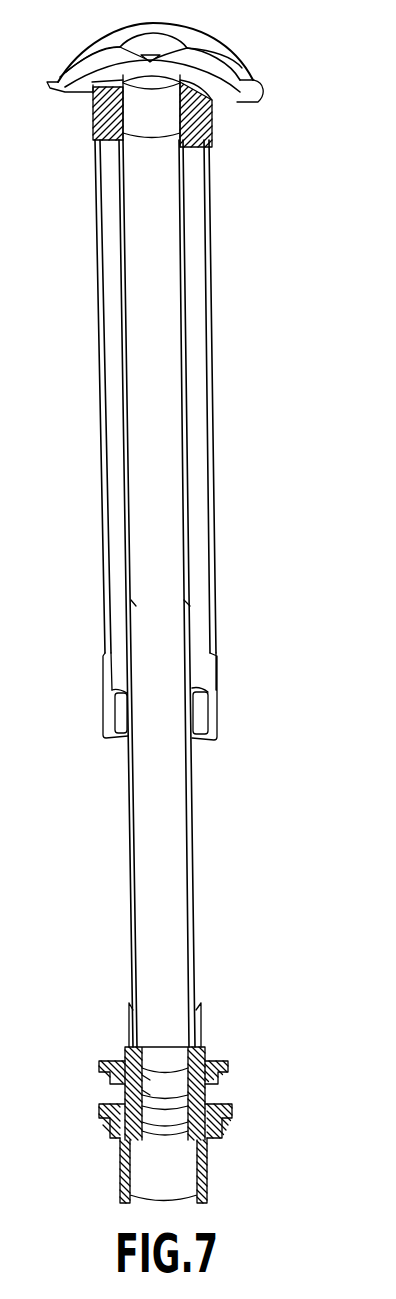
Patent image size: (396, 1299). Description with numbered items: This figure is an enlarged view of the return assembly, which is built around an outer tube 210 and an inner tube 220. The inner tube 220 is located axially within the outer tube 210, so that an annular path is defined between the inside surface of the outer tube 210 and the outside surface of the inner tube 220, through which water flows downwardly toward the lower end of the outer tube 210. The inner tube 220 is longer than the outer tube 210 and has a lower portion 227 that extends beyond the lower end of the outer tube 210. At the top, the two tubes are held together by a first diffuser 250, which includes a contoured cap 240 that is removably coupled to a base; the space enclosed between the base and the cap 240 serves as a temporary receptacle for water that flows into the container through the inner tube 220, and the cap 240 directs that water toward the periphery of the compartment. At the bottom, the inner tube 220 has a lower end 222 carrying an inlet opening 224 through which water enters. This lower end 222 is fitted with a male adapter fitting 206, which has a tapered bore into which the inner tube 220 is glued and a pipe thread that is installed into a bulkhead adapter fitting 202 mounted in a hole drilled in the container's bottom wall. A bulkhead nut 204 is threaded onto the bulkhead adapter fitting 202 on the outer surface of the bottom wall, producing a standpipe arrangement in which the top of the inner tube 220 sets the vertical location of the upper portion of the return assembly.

The bulkhead adapter fitting 202 is at (220, 1067).
The bulkhead nut 204 is at (226, 1110).
The male adapter fitting 206 is at (130, 1005).
The outer tube 210 is at (210, 302).
The inner tube 220 is at (141, 279).
The lower end 222 is at (182, 1048).
The inlet opening 224 is at (157, 1048).
The lower portion 227 is at (130, 603).
The cap 240 is at (240, 74).
The first diffuser 250 is at (213, 125).